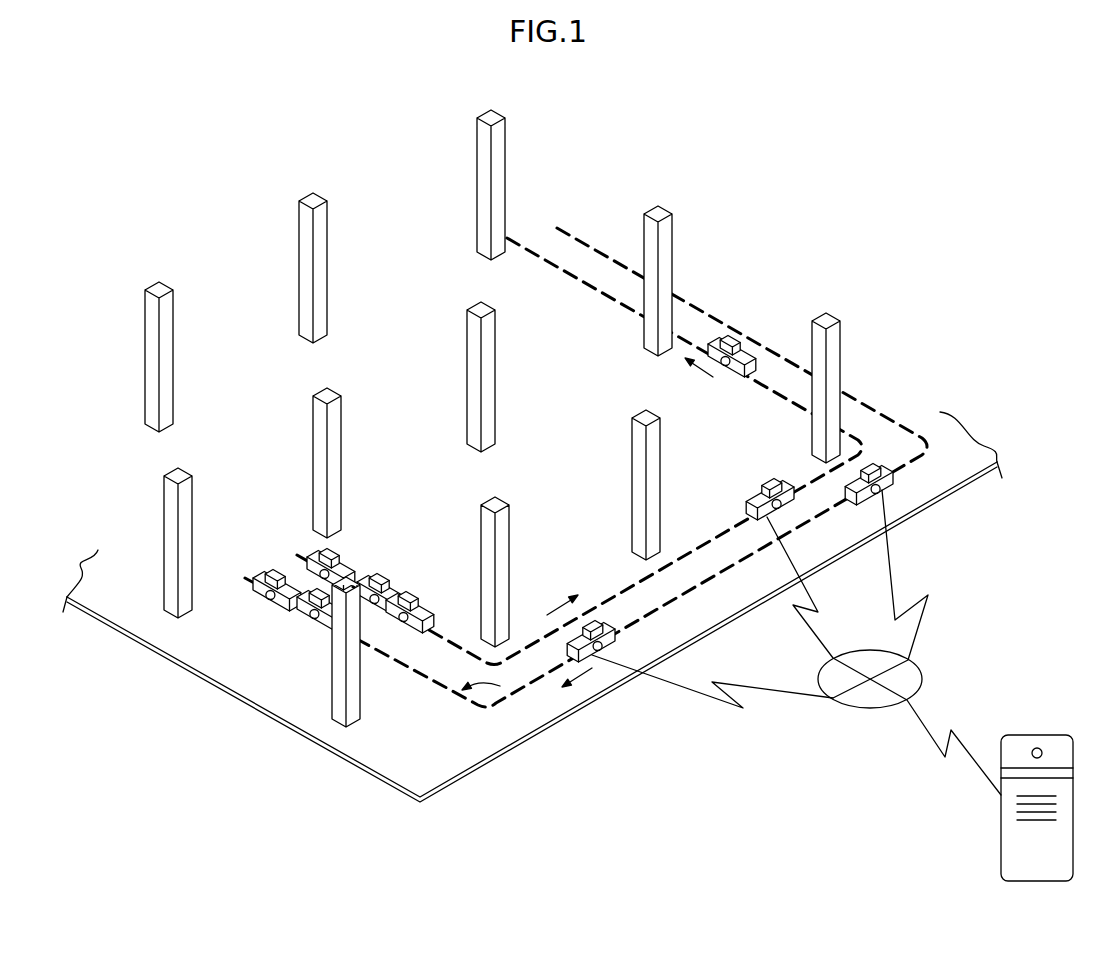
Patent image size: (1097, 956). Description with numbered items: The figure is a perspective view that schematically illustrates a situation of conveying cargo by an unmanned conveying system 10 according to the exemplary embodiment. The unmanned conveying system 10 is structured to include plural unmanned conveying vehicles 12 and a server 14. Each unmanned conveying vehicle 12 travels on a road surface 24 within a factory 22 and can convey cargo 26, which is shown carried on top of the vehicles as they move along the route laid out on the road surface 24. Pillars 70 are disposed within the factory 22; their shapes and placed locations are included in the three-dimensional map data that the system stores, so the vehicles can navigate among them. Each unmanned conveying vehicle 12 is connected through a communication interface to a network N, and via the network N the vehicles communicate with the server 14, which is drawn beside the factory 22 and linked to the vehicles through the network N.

The unmanned conveying system 10 is at (571, 495).
The unmanned conveying vehicle 12 is at (742, 350).
The server 14 is at (1053, 735).
The factory 22 is at (788, 261).
The road surface 24 is at (563, 420).
The cargo 26 is at (727, 338).
The pillar 70 is at (497, 148).
The network N is at (922, 672).